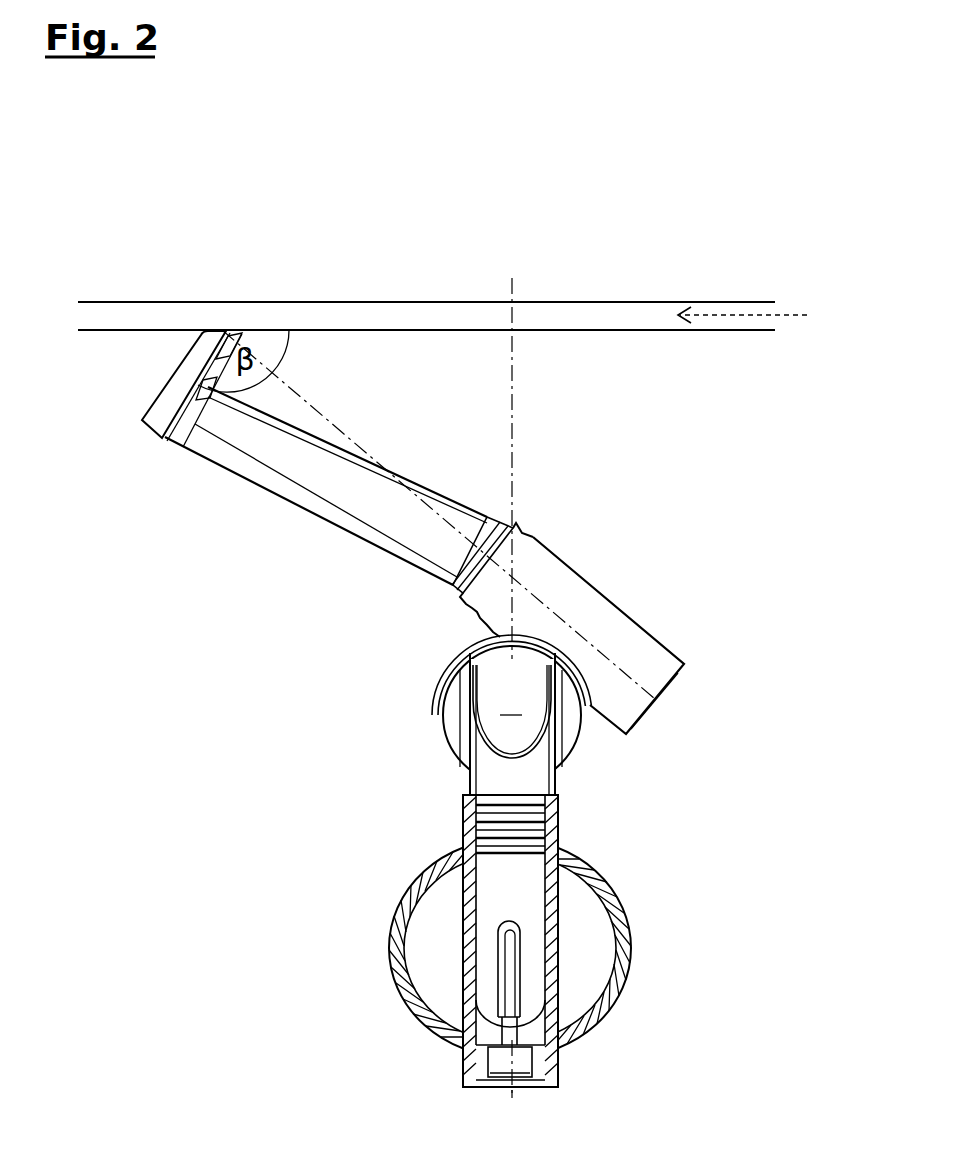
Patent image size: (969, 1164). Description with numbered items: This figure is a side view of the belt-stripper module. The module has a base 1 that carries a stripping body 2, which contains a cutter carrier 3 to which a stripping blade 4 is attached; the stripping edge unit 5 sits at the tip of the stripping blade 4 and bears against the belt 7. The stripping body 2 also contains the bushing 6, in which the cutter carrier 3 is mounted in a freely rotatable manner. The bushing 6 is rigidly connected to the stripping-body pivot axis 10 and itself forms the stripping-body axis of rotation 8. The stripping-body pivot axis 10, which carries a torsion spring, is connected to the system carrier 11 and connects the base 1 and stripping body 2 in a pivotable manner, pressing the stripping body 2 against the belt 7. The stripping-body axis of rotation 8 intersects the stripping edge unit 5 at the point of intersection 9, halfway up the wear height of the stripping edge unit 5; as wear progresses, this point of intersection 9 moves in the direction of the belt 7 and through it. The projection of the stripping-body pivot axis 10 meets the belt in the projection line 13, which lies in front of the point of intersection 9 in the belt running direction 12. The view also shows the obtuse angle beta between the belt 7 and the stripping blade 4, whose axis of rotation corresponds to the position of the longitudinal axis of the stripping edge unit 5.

The base 1 is at (555, 978).
The stripping body 2 is at (540, 567).
The cutter carrier 3 is at (335, 508).
The stripping blade 4 is at (190, 378).
The stripping edge unit 5 is at (217, 332).
The bushing 6 is at (593, 612).
The belt 7 is at (643, 314).
The stripping-body axis of rotation 8 is at (307, 412).
The point of intersection 9 is at (227, 333).
The stripping-body pivot axis 10 is at (502, 715).
The system carrier 11 is at (623, 898).
The belt running direction 12 is at (763, 318).
The projection line 13 is at (505, 300).